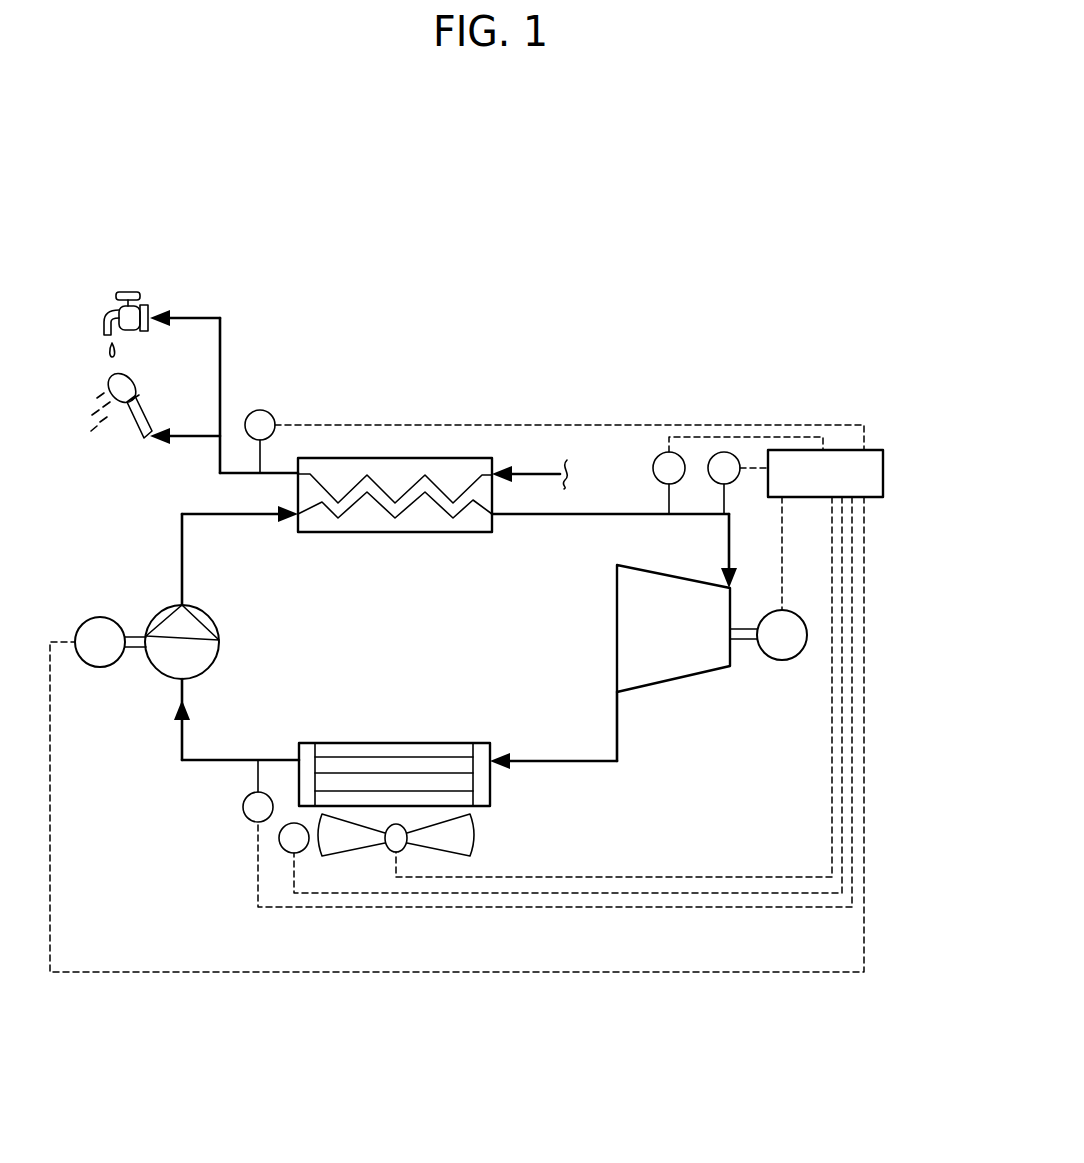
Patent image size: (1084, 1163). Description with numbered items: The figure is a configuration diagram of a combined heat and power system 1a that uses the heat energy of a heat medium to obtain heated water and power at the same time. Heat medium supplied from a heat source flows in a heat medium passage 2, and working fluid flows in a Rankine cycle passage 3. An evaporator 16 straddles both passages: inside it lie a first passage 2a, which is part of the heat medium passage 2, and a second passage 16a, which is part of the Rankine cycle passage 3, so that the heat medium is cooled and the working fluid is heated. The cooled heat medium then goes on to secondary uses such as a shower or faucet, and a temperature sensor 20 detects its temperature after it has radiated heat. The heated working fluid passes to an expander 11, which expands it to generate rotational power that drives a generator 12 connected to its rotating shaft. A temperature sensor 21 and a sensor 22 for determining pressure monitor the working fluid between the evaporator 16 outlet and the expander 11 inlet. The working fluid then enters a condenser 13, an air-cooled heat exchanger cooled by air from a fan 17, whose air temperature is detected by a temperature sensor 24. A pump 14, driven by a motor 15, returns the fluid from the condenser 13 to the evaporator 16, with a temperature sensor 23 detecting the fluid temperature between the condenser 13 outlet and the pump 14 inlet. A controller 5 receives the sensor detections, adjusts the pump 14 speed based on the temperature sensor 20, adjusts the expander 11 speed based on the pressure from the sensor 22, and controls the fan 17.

The combined heat and power system 1a is at (694, 240).
The heat medium passage 2 is at (543, 470).
The first passage 2a is at (425, 474).
The Rankine cycle passage 3 is at (576, 763).
The controller 5 is at (883, 470).
The expander 11 is at (617, 630).
The generator 12 is at (782, 661).
The condenser 13 is at (376, 743).
The pump 14 is at (157, 614).
The motor 15 is at (82, 622).
The evaporator 16 is at (400, 533).
The second passage 16a is at (445, 515).
The fan 17 is at (474, 841).
The temperature sensor 20 is at (270, 412).
The temperature sensor 21 is at (681, 454).
The sensor 22 is at (736, 454).
The temperature sensor 23 is at (243, 812).
The temperature sensor 24 is at (281, 848).